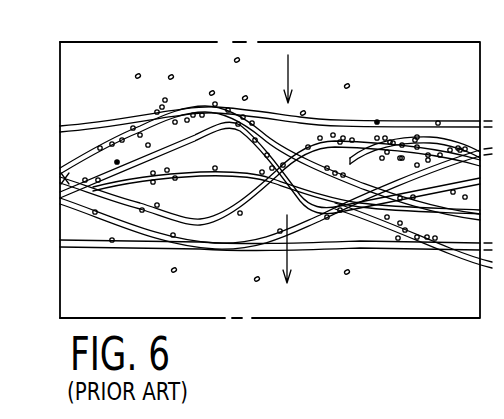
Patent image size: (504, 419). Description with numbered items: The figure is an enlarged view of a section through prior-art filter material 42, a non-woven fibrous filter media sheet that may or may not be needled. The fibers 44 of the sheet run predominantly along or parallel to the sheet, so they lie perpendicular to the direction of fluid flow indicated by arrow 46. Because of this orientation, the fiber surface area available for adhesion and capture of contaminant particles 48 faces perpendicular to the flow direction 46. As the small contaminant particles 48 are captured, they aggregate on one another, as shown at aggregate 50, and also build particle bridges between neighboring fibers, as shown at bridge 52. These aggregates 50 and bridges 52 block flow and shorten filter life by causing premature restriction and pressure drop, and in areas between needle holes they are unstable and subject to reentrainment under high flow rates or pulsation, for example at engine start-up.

The filter material 42 is at (67, 144).
The fibers 44 is at (88, 124).
The arrow (fluid flow direction) 46 is at (289, 70).
The contaminant particles 48 is at (211, 90).
The aggregate 50 is at (66, 180).
The particle bridge 52 is at (151, 120).